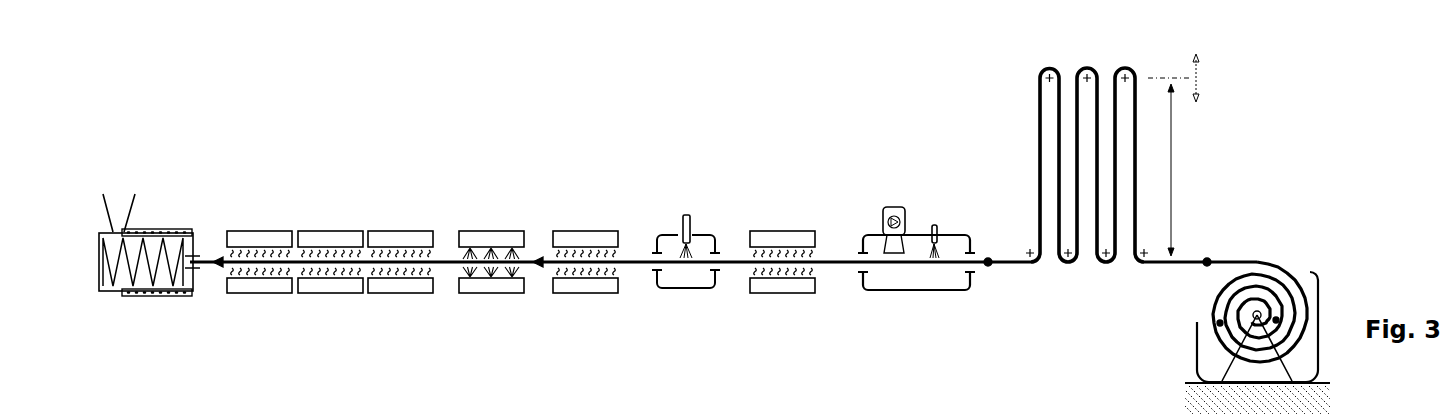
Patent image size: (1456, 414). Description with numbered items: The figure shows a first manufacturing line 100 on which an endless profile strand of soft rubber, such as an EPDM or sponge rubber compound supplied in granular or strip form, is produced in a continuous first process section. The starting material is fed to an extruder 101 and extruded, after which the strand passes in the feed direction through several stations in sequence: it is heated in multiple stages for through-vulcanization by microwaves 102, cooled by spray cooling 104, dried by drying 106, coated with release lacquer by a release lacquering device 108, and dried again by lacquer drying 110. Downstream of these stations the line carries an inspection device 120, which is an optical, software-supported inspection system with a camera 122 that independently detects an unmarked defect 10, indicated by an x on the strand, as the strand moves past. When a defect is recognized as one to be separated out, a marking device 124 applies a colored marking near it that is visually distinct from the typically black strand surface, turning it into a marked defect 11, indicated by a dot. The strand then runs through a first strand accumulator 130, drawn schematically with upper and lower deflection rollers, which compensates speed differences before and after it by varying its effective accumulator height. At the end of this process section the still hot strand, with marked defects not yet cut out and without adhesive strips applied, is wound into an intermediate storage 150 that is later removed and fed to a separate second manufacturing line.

The first manufacturing line 100 is at (175, 100).
The unmarked defect 10 is at (218, 267).
The marked defect 11 is at (988, 267).
The extruder 101 is at (151, 229).
The microwaves 102 is at (268, 231).
The spray cooling 104 is at (490, 231).
The drying 106 is at (583, 231).
The release lacquering device 108 is at (668, 234).
The lacquer drying 110 is at (775, 231).
The inspection device 120 is at (942, 209).
The camera 122 is at (893, 207).
The marking device 124 is at (938, 226).
The first strand accumulator 130 is at (1085, 40).
The intermediate storage 150 is at (1280, 252).